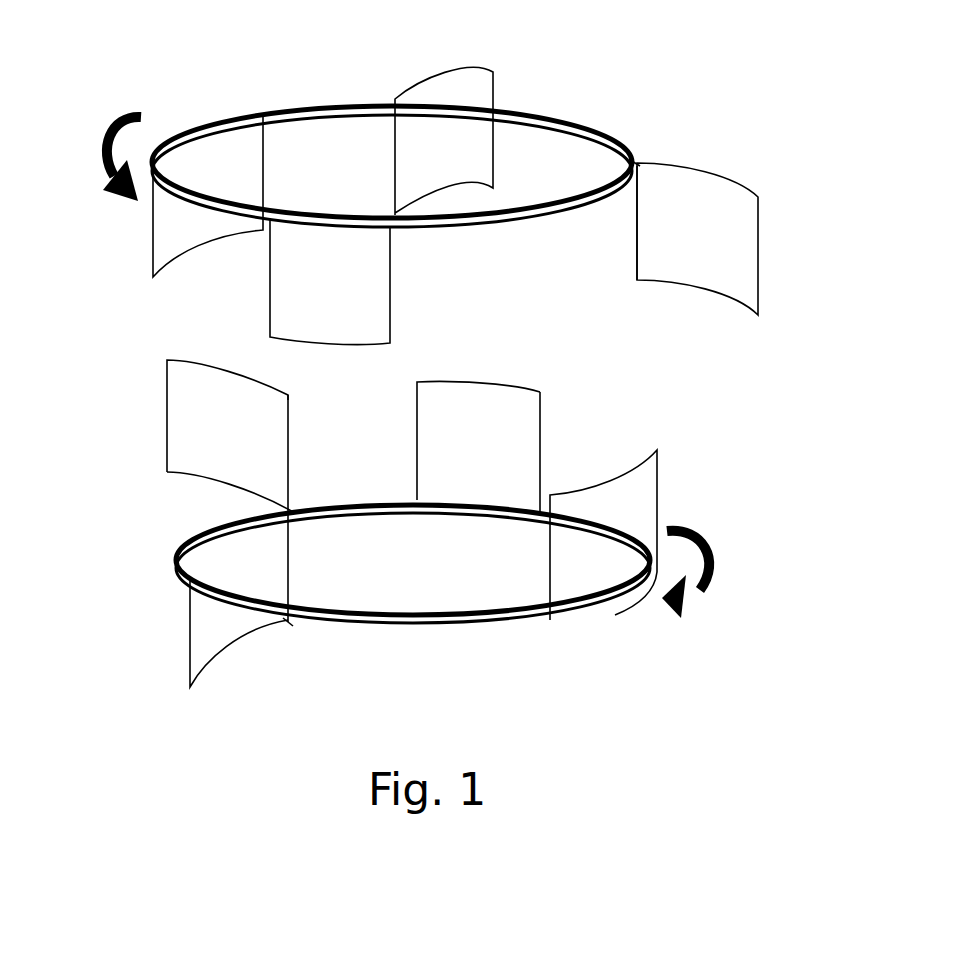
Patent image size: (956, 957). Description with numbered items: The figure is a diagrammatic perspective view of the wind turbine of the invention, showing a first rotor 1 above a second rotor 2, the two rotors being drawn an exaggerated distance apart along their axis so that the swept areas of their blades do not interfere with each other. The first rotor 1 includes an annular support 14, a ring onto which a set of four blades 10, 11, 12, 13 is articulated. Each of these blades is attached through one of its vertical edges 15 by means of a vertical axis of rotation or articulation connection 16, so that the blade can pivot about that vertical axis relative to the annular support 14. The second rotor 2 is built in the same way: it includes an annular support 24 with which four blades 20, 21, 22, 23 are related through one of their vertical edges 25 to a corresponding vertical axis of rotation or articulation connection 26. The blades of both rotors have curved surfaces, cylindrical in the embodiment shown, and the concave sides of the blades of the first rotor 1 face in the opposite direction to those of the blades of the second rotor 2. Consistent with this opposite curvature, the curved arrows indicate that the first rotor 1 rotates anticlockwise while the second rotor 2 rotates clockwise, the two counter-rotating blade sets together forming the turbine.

The first rotor 1 is at (618, 106).
The second rotor 2 is at (676, 427).
The blade 10 is at (697, 239).
The blade 11 is at (444, 141).
The blade 12 is at (208, 196).
The blade 13 is at (330, 281).
The annular support 14 is at (568, 123).
The vertical edge 15 is at (635, 220).
The vertical axis of rotation or articulation connection 16 is at (636, 160).
The blade 20 is at (603, 535).
The blade 21 is at (478, 440).
The blade 22 is at (231, 436).
The blade 23 is at (239, 633).
The annular support 24 is at (493, 623).
The vertical edge 25 is at (292, 470).
The vertical axis of rotation or articulation connection 26 is at (291, 622).